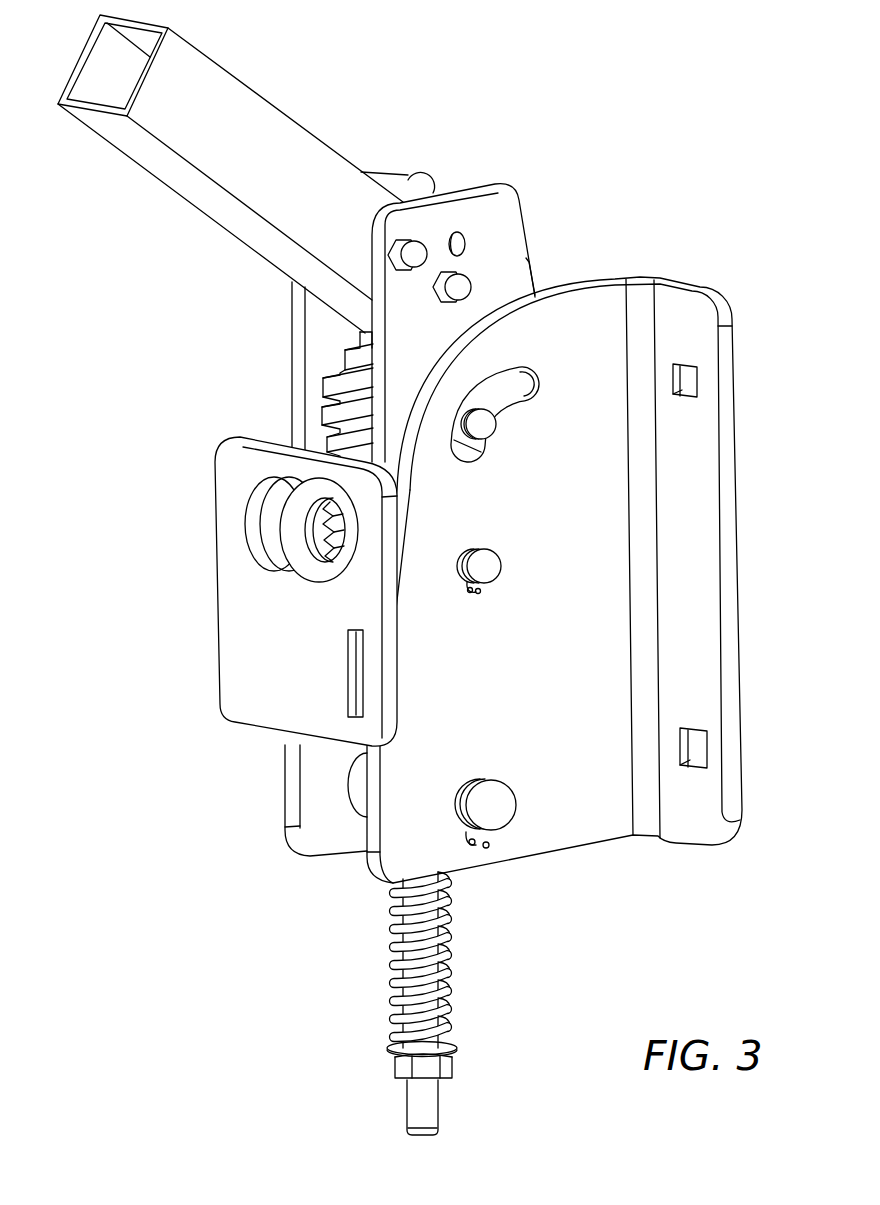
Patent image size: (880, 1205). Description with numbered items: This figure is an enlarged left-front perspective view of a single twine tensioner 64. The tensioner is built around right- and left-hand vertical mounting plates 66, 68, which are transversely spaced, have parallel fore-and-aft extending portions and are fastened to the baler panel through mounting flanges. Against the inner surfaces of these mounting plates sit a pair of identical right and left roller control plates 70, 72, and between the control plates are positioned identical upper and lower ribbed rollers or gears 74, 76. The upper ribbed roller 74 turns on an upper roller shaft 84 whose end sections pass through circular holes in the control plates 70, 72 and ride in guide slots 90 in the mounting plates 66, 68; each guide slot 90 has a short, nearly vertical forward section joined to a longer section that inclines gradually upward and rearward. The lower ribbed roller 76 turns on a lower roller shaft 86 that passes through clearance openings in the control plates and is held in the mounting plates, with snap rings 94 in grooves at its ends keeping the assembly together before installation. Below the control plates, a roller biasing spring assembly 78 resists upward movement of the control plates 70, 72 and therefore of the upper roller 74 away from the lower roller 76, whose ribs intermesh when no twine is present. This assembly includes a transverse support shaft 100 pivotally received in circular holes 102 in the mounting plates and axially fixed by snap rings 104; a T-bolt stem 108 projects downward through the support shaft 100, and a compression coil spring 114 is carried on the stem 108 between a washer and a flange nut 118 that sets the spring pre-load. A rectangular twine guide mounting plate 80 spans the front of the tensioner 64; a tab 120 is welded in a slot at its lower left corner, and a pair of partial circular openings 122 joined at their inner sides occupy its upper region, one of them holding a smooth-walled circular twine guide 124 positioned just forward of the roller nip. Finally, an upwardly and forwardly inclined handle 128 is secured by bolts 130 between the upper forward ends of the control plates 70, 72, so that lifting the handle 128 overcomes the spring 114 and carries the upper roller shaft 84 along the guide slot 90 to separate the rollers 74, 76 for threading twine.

The twine tensioner 64 is at (184, 484).
The right-hand mounting plate 66 is at (307, 836).
The left-hand mounting plate 68 is at (630, 836).
The right roller control plate 70 is at (423, 176).
The left roller control plate 72 is at (498, 212).
The upper ribbed roller 74 is at (323, 382).
The lower ribbed roller 76 is at (357, 560).
The roller biasing spring assembly 78 is at (421, 957).
The twine guide mounting plate 80 is at (238, 700).
The upper roller shaft 84 is at (486, 440).
The lower roller shaft 86 is at (498, 563).
The guide slot 90 is at (528, 395).
The snap ring 94 is at (469, 594).
The support shaft 100 is at (500, 802).
The circular hole 102 is at (358, 817).
The snap ring 104 is at (478, 770).
The T-bolt stem 108 is at (432, 1116).
The compression coil spring 114 is at (452, 916).
The flange nut 118 is at (445, 1068).
The tab 120 is at (363, 678).
The partial circular openings 122 is at (245, 528).
The twine guide 124 is at (317, 567).
The handle 128 is at (266, 165).
The bolts 130 is at (450, 288).